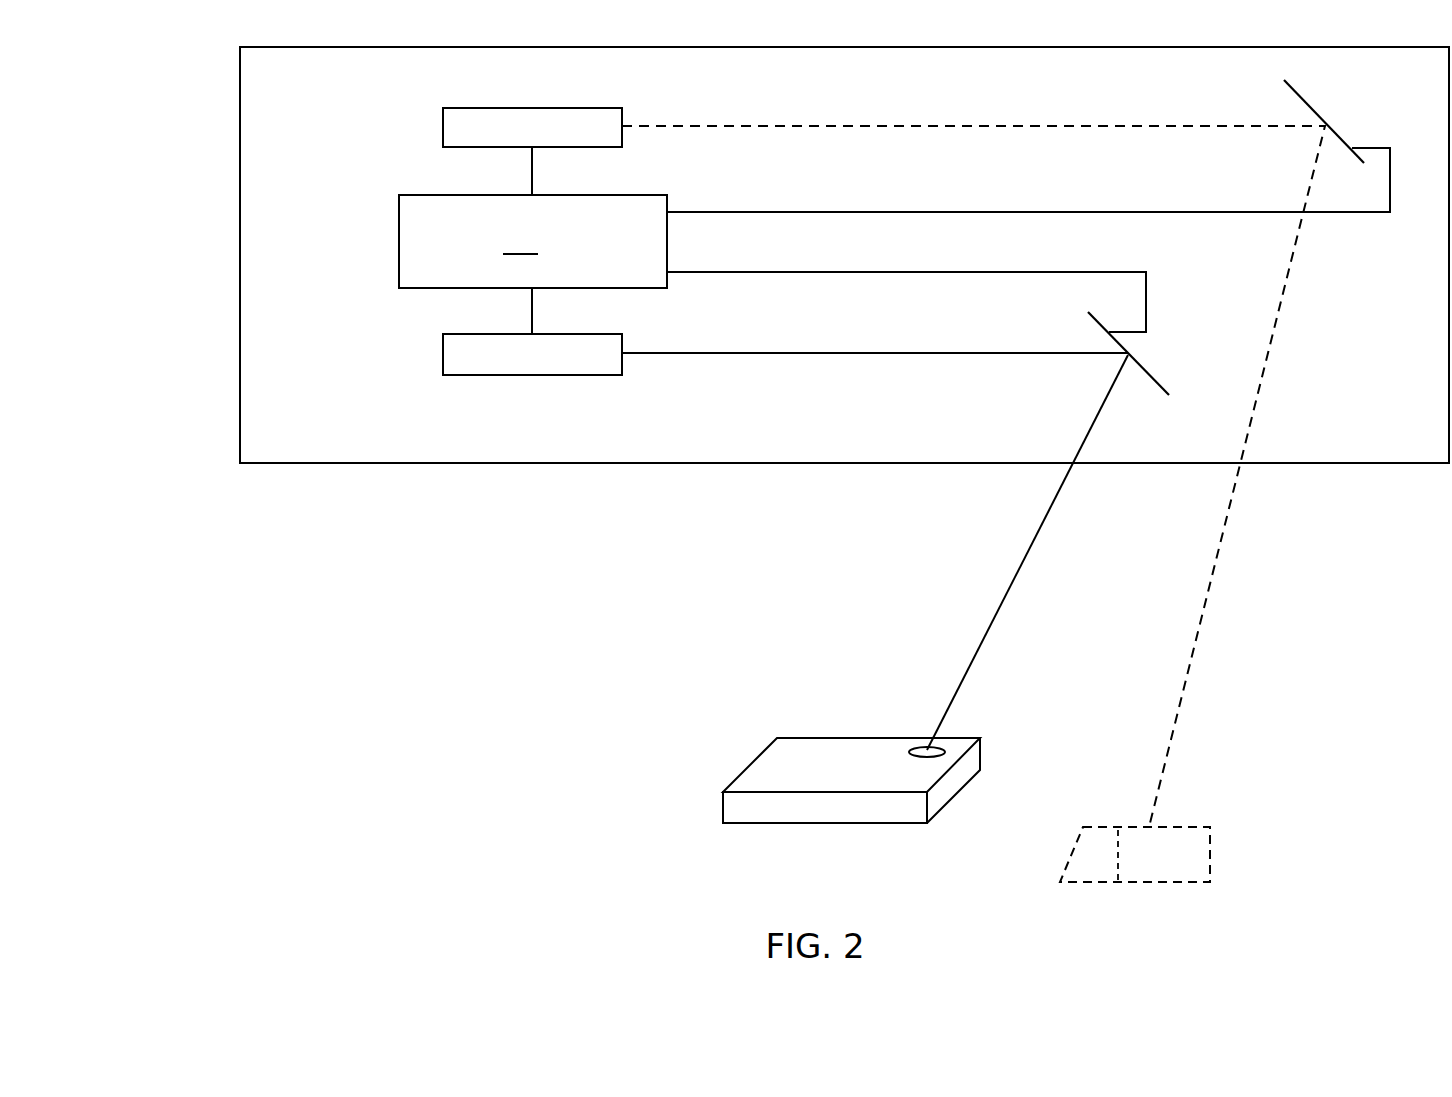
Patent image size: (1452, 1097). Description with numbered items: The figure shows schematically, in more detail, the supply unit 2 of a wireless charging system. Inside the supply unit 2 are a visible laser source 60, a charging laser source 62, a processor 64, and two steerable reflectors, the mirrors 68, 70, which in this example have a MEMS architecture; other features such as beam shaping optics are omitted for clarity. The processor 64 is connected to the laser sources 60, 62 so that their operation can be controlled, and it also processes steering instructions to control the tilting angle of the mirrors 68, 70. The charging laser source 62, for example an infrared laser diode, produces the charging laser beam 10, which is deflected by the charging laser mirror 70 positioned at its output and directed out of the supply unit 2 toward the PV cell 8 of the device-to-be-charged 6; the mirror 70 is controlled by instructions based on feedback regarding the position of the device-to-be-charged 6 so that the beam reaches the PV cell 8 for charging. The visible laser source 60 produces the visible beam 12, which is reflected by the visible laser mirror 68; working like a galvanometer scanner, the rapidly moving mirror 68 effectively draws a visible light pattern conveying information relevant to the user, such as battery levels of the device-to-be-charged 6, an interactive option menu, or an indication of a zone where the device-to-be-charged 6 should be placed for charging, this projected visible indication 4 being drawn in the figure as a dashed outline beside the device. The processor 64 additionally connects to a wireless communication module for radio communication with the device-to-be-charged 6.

The supply unit 2 is at (240, 155).
The visible laser source 60 is at (443, 128).
The charging laser source 62 is at (443, 353).
The processor 64 is at (894, 240).
The visible laser mirror 68 is at (1303, 100).
The charging laser mirror 70 is at (1145, 365).
The charging laser beam 10 is at (985, 637).
The visible laser beam 12 is at (1183, 690).
The device-to-be-charged 6 is at (743, 770).
The PV cell 8 is at (917, 748).
The target mark 4 is at (1207, 870).